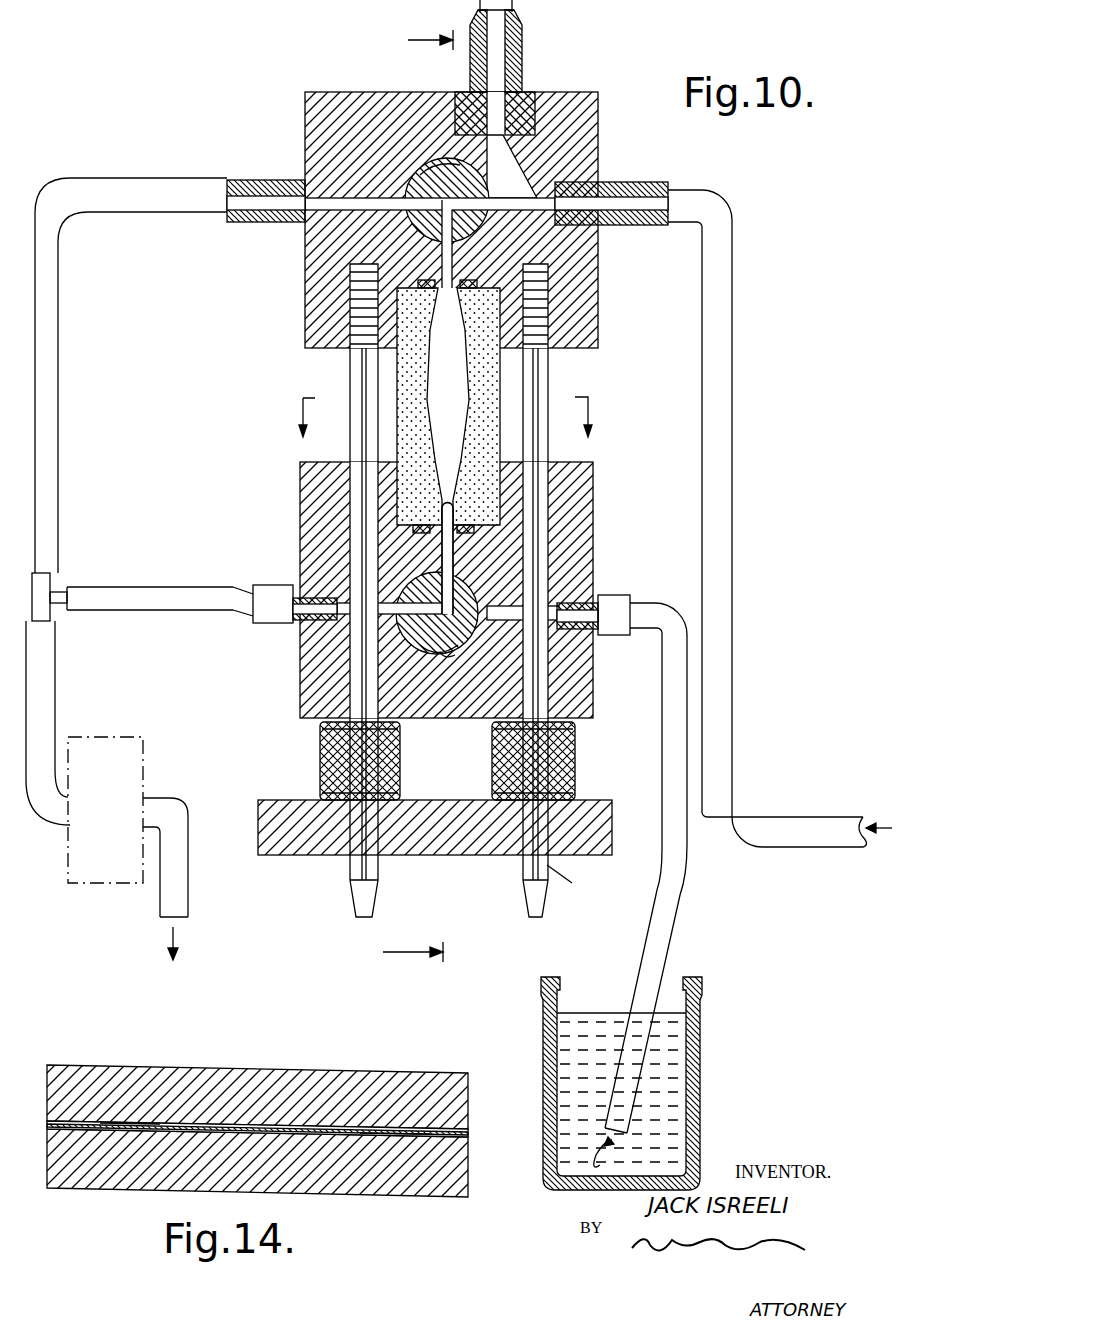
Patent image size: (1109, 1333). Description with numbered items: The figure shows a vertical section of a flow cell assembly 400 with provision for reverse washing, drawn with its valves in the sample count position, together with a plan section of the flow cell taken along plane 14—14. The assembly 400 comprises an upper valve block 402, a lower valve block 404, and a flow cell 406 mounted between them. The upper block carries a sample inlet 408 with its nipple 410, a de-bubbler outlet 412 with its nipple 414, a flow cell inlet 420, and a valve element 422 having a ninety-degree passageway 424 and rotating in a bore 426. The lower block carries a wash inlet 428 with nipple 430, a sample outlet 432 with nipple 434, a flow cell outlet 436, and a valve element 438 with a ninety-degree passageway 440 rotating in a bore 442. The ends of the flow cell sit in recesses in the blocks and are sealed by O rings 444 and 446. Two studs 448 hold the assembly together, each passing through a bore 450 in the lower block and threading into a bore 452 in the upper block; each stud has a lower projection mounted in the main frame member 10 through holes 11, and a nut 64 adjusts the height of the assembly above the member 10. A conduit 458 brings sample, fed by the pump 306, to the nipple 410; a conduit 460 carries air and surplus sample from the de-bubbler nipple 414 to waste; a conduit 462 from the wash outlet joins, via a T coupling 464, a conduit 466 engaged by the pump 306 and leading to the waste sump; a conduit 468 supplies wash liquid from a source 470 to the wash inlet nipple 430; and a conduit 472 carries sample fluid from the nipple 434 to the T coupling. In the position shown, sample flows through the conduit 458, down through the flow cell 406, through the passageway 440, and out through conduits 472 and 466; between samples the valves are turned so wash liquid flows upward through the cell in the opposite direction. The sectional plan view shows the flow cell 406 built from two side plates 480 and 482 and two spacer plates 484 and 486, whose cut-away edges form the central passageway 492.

In FIG. 10, the flow cell assembly 400 is at (198, 92).
In FIG. 10, the upper valve block 402 is at (314, 92).
In FIG. 10, the lower valve block 404 is at (308, 482).
In FIG. 10, the flow cell 406 is at (397, 374).
In FIG. 10, the sample inlet 408 is at (582, 188).
In FIG. 10, the sample inlet nipple 410 is at (642, 190).
In FIG. 10, the de-bubbler outlet 412 is at (517, 168).
In FIG. 10, the de-bubbler nipple 414 is at (520, 68).
In FIG. 10, the flow cell inlet 420 is at (452, 258).
In FIG. 10, the valve element 422 is at (433, 170).
In FIG. 10, the passageway 424 is at (438, 230).
In FIG. 10, the bore 426 is at (418, 183).
In FIG. 10, the wash inlet 428 is at (525, 606).
In FIG. 10, the wash inlet nipple 430 is at (570, 608).
In FIG. 10, the sample outlet 432 is at (362, 602).
In FIG. 10, the sample outlet nipple 434 is at (315, 590).
In FIG. 10, the flow cell outlet 436 is at (447, 548).
In FIG. 10, the valve element 438 is at (478, 634).
In FIG. 10, the passageway 440 is at (450, 645).
In FIG. 10, the bore 442 is at (448, 655).
In FIG. 10, the O ring 444 is at (426, 280).
In FIG. 10, the O ring 446 is at (405, 524).
In FIG. 10, the stud 448 is at (548, 373).
In FIG. 10, the bore 450 is at (545, 675).
In FIG. 10, the bore 452 is at (548, 316).
In FIG. 10, the conduit 458 is at (722, 574).
In FIG. 10, the conduit 460 is at (512, 5).
In FIG. 10, the conduit 462 is at (55, 376).
In FIG. 10, the T coupling 464 is at (52, 577).
In FIG. 10, the conduit 466 is at (47, 683).
In FIG. 10, the conduit 468 is at (677, 909).
In FIG. 10, the source of wash liquid 470 is at (693, 1063).
In FIG. 10, the conduit 472 is at (168, 598).
In FIG. 10, the pump 306 is at (122, 867).
In FIG. 10, the nut 64 is at (575, 765).
In FIG. 10, the main frame member 10 is at (467, 848).
In FIG. 10, the holes 11 is at (486, 498).
In FIG. 10, the plane 14— 14 is at (449, 420).
In FIG. 14, the side plate 480 is at (487, 1067).
In FIG. 14, the side plate 482 is at (440, 1187).
In FIG. 14, the spacer plate 484 is at (128, 1123).
In FIG. 14, the spacer plate 486 is at (393, 1133).
In FIG. 14, the central passageway 492 is at (218, 1123).